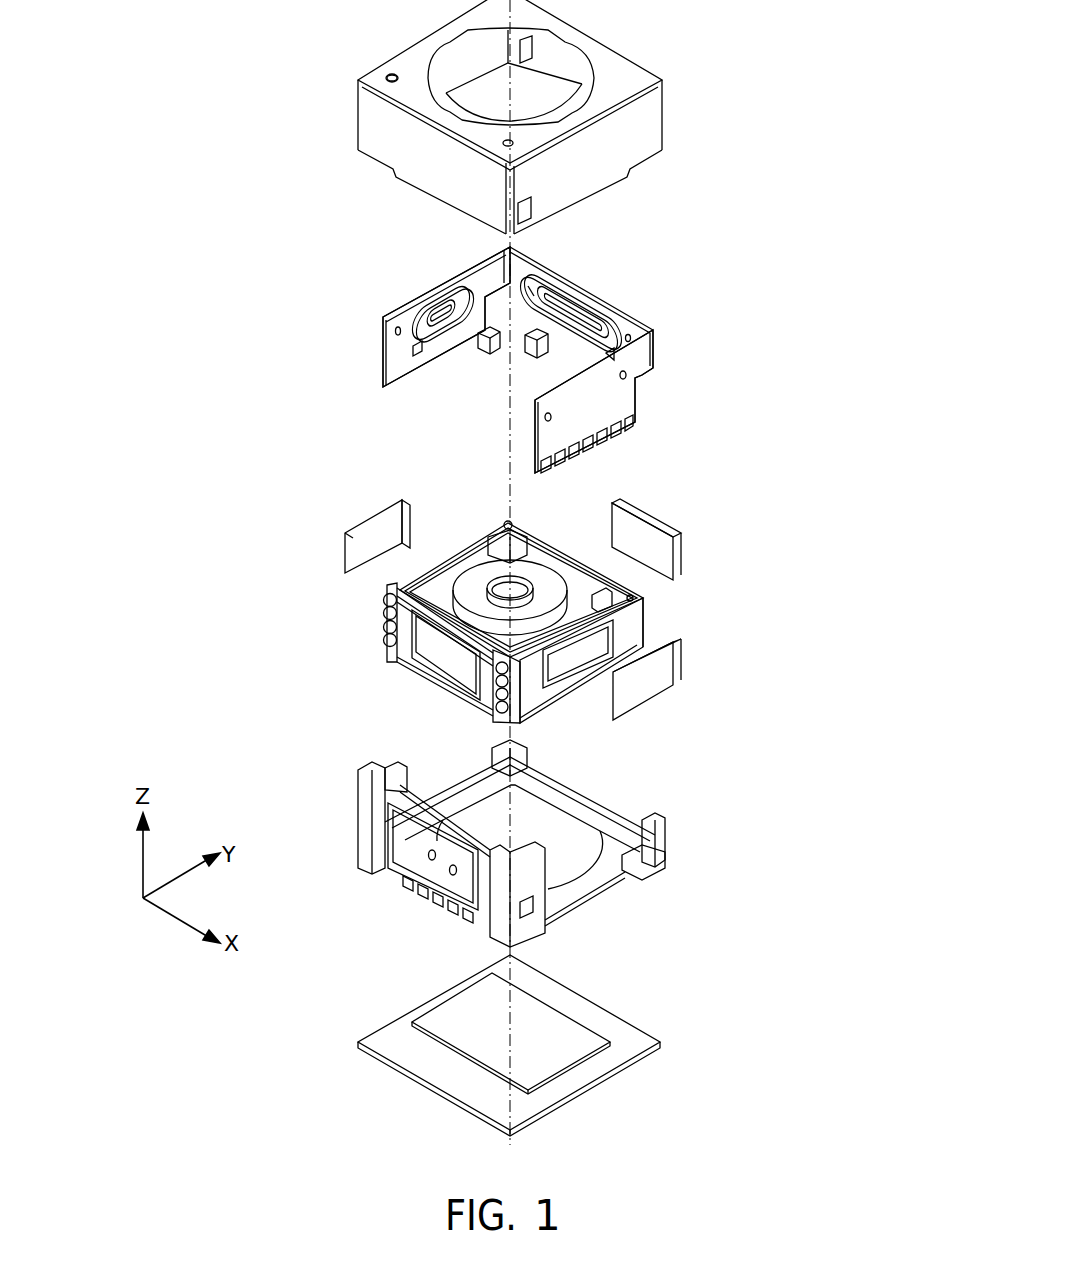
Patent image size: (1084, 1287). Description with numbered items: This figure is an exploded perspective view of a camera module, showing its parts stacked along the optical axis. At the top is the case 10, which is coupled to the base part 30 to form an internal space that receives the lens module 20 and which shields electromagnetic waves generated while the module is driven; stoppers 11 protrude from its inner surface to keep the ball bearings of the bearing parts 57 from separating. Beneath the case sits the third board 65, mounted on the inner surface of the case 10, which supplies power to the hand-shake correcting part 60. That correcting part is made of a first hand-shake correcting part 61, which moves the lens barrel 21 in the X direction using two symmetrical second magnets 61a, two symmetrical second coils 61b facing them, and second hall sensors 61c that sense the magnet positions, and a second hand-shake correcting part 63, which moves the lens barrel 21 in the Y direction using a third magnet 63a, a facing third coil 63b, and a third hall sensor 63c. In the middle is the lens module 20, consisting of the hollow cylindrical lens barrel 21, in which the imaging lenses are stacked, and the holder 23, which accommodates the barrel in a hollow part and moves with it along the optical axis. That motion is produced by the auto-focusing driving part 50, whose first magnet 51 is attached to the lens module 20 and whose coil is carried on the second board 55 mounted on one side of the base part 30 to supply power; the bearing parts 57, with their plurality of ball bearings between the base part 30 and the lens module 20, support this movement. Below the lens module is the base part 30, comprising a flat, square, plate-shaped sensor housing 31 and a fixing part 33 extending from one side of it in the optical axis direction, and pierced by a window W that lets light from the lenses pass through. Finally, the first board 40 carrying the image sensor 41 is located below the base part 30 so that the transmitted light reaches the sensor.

The case 10 is at (620, 62).
The stopper 11 is at (388, 76).
The lens module 20 is at (612, 622).
The lens barrel 21 is at (570, 590).
The holder 23 is at (655, 628).
The base part 30 is at (537, 861).
The sensor housing 31 is at (615, 870).
The fixing part 33 is at (575, 892).
The window W is at (557, 805).
The first board 40 is at (544, 1045).
The image sensor 41 is at (558, 1040).
The auto-focusing driving part 50 is at (400, 756).
The first magnet 51 is at (447, 657).
The second board 55 is at (405, 866).
The bearing parts 57 is at (388, 610).
The hand-shake correcting part 60 is at (513, 520).
The first hand-shake correcting part 61 is at (459, 468).
The second magnets 61a is at (362, 545).
The second coils 61b is at (428, 292).
The second hall sensors 61c is at (452, 287).
The second hand-shake correcting part 63 is at (689, 401).
The third magnet 63a is at (660, 520).
The third coil 63b is at (618, 300).
The third hall sensor 63c is at (560, 282).
The third board 65 is at (596, 268).